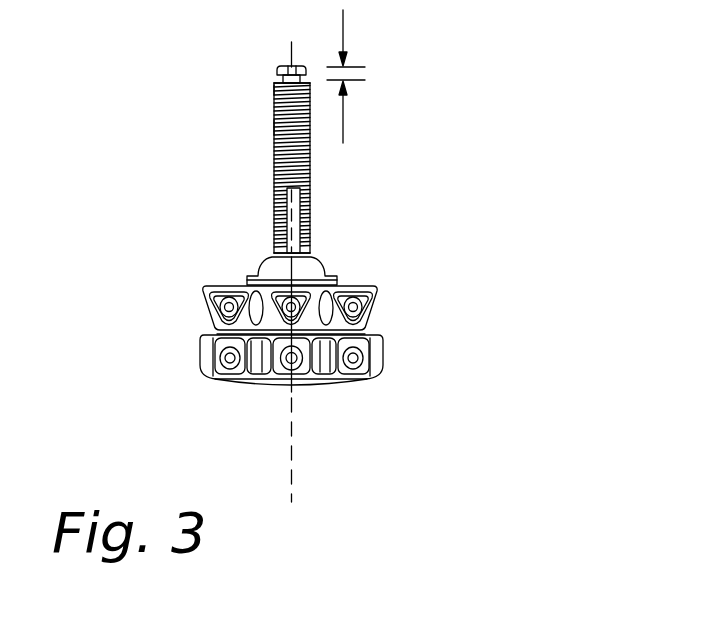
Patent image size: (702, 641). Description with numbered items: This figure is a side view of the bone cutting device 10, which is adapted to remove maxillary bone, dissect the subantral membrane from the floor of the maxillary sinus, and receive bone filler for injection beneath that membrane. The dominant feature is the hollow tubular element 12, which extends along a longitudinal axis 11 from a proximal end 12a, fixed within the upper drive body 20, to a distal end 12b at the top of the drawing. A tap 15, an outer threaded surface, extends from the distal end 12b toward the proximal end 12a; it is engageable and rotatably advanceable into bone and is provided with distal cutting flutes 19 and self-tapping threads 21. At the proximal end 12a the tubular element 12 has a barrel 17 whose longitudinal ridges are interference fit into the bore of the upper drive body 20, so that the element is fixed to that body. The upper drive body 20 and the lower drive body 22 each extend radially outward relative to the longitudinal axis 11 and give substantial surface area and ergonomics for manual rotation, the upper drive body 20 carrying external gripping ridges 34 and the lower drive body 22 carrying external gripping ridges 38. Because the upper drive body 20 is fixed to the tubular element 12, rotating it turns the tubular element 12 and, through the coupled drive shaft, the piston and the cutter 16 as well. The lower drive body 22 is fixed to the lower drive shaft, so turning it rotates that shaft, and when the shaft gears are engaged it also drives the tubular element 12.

The bone cutting device 10 is at (452, 160).
The longitudinal axis 11 is at (292, 456).
The hollow tubular element 12 is at (309, 172).
The proximal end 12a is at (259, 262).
The distal end 12b is at (310, 84).
The tap 15 is at (310, 144).
The cutter 16 is at (278, 69).
The barrel 17 is at (310, 258).
The distal cutting flutes 19 is at (274, 86).
The upper drive body 20 is at (285, 293).
The self-tapping threads 21 is at (274, 127).
The lower drive body 22 is at (322, 397).
The external gripping ridges 34 is at (208, 290).
The external gripping ridges 38 is at (325, 365).